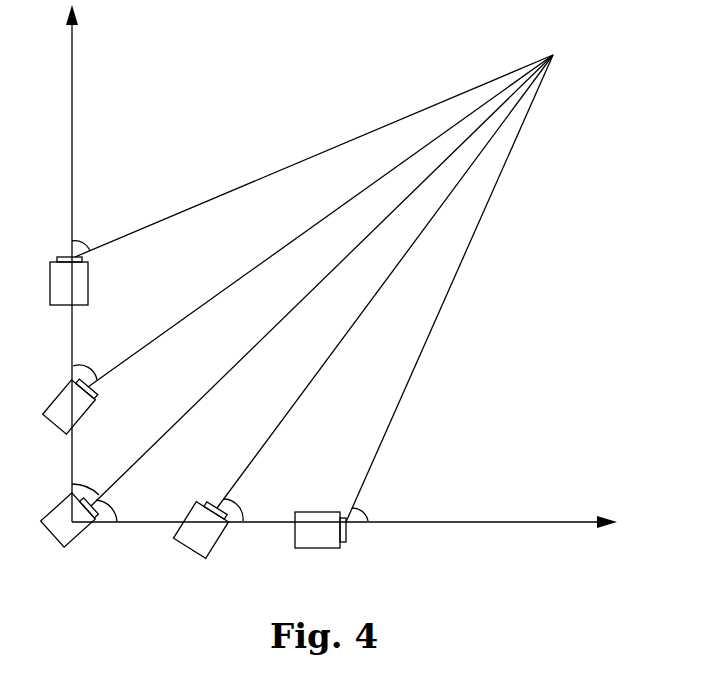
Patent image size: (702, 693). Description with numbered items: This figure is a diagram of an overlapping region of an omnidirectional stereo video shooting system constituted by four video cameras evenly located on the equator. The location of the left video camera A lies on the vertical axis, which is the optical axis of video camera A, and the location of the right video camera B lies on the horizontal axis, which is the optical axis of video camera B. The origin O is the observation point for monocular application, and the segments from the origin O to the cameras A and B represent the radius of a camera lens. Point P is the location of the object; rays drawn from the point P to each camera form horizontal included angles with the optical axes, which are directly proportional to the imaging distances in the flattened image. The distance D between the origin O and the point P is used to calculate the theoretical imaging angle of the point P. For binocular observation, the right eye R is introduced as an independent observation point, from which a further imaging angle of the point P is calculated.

The object location point P is at (331, 276).
The distance between origin and object point D is at (322, 280).
The left video camera location A is at (65, 260).
The right video camera location B is at (208, 461).
The origin O is at (88, 495).
The right eye observation point R is at (223, 538).